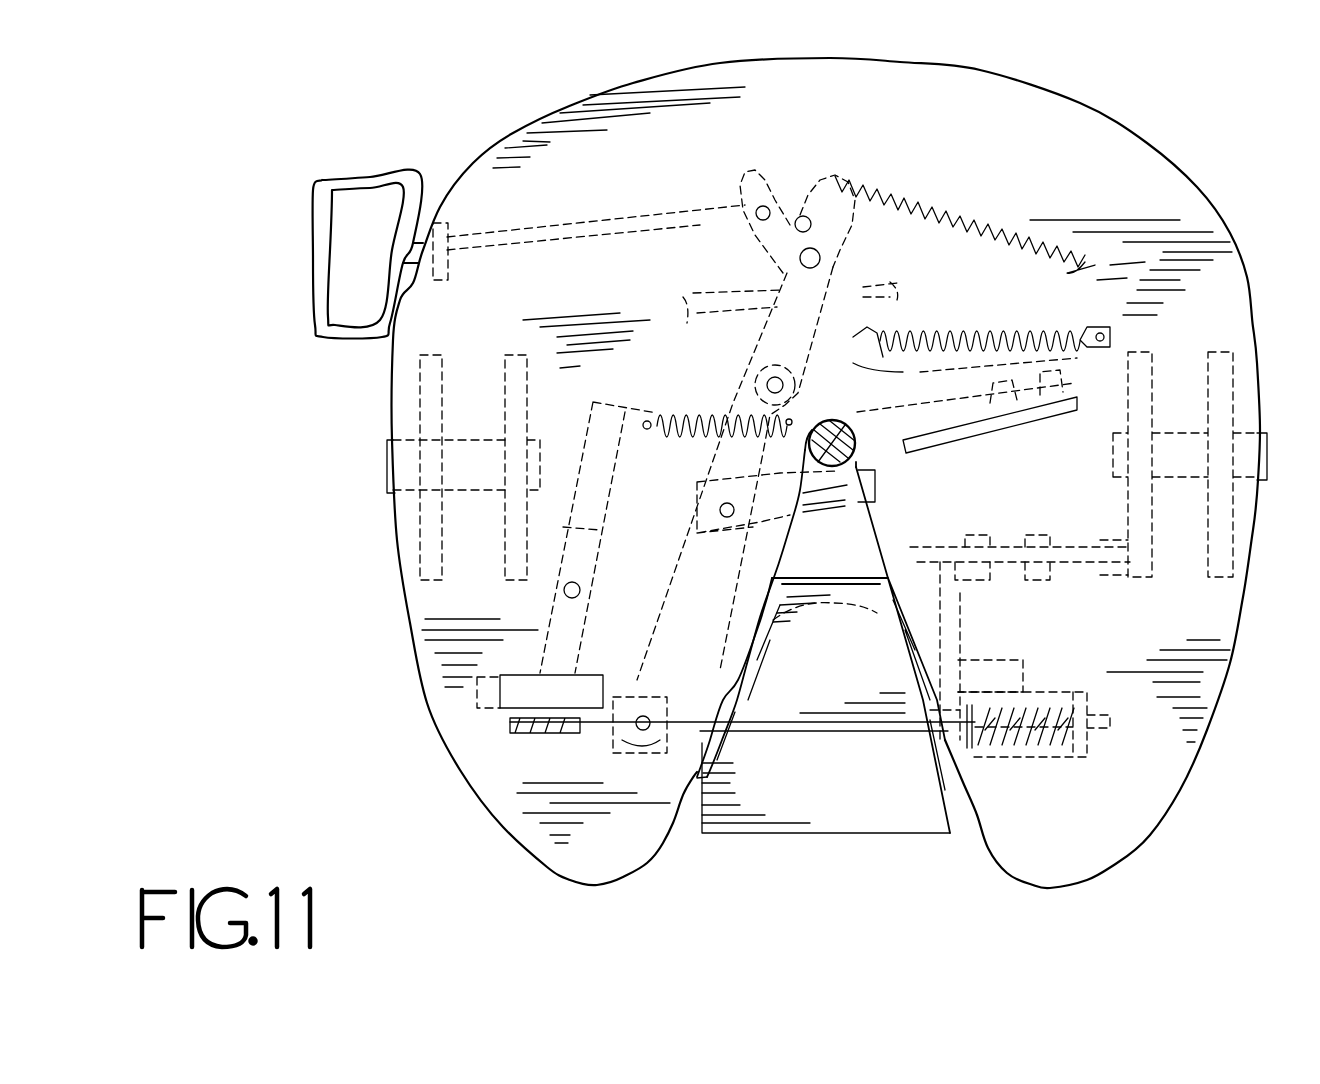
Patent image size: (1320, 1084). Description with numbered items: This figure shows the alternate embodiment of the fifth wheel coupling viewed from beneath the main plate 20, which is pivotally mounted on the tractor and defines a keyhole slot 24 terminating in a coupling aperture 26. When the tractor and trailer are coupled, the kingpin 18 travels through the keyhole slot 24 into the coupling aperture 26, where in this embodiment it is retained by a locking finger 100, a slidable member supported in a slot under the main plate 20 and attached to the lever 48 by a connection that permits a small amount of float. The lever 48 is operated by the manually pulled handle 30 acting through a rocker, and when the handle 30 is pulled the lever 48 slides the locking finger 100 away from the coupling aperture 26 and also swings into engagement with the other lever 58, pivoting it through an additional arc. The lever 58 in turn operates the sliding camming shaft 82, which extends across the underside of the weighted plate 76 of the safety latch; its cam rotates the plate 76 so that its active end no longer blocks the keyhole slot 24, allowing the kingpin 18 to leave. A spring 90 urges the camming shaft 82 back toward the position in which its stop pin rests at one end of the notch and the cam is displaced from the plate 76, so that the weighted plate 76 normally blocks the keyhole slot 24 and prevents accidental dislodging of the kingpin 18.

The kingpin 18 is at (818, 477).
The main plate 20 is at (463, 605).
The keyhole slot 24 is at (697, 778).
The coupling aperture 26 is at (865, 447).
The handle 30 is at (359, 182).
The lever 48 is at (790, 285).
The lever 58 is at (600, 530).
The weighted plate 76 is at (860, 787).
The camming shaft 82 is at (681, 705).
The spring 90 is at (1040, 760).
The locking finger 100 is at (858, 483).